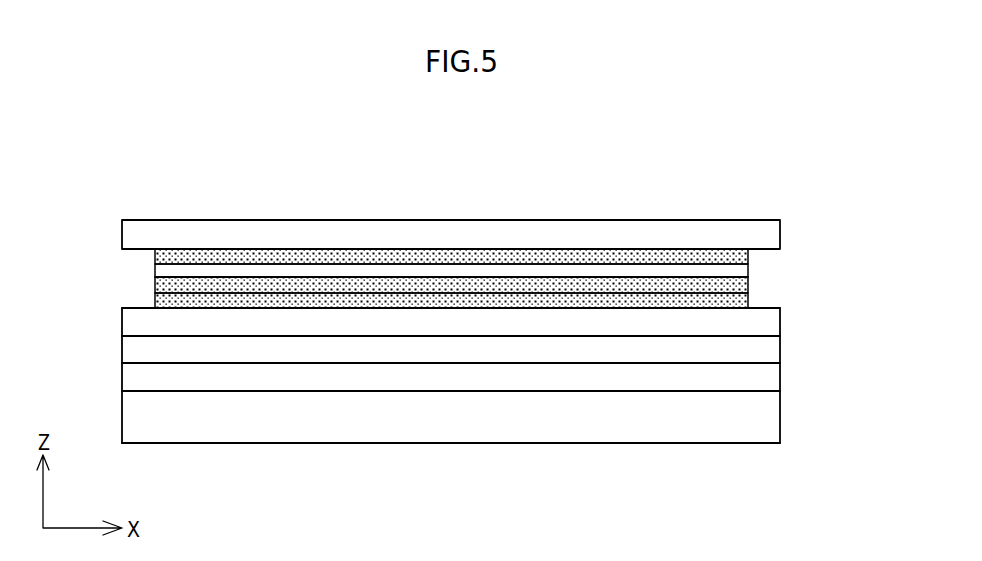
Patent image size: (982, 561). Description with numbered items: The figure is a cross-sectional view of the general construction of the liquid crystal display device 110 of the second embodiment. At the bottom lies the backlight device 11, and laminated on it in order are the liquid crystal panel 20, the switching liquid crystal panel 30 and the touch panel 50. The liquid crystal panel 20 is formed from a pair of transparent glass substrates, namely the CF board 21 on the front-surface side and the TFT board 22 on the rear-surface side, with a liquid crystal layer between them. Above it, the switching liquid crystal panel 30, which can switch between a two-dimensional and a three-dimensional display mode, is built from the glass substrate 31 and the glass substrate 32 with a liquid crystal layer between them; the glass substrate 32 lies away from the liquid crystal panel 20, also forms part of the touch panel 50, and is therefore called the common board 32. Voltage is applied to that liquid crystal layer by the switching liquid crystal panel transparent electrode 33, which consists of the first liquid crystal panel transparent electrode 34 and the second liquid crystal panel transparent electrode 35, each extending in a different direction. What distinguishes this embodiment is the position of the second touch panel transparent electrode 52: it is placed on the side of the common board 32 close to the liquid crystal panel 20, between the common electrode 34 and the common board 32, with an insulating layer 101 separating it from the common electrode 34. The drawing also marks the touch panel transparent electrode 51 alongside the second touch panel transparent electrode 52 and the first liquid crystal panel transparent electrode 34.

The backlight device 11 is at (773, 426).
The liquid crystal panel 20 is at (840, 328).
The CF board 21 is at (770, 347).
The TFT board 22 is at (773, 381).
The switching liquid crystal panel 30 is at (795, 280).
The glass substrate 31 is at (133, 320).
The common board 32 is at (133, 235).
The switching liquid crystal panel transparent electrode 33 is at (517, 296).
The first liquid crystal panel transparent electrode 34 is at (593, 285).
The second liquid crystal panel transparent electrode 35 is at (748, 297).
The touch panel 50 is at (782, 197).
The first touch panel transparent electrode 51 is at (451, 202).
The second touch panel transparent electrode 52 is at (383, 255).
The insulating layer 101 is at (508, 273).
The liquid crystal display device 110 is at (777, 478).